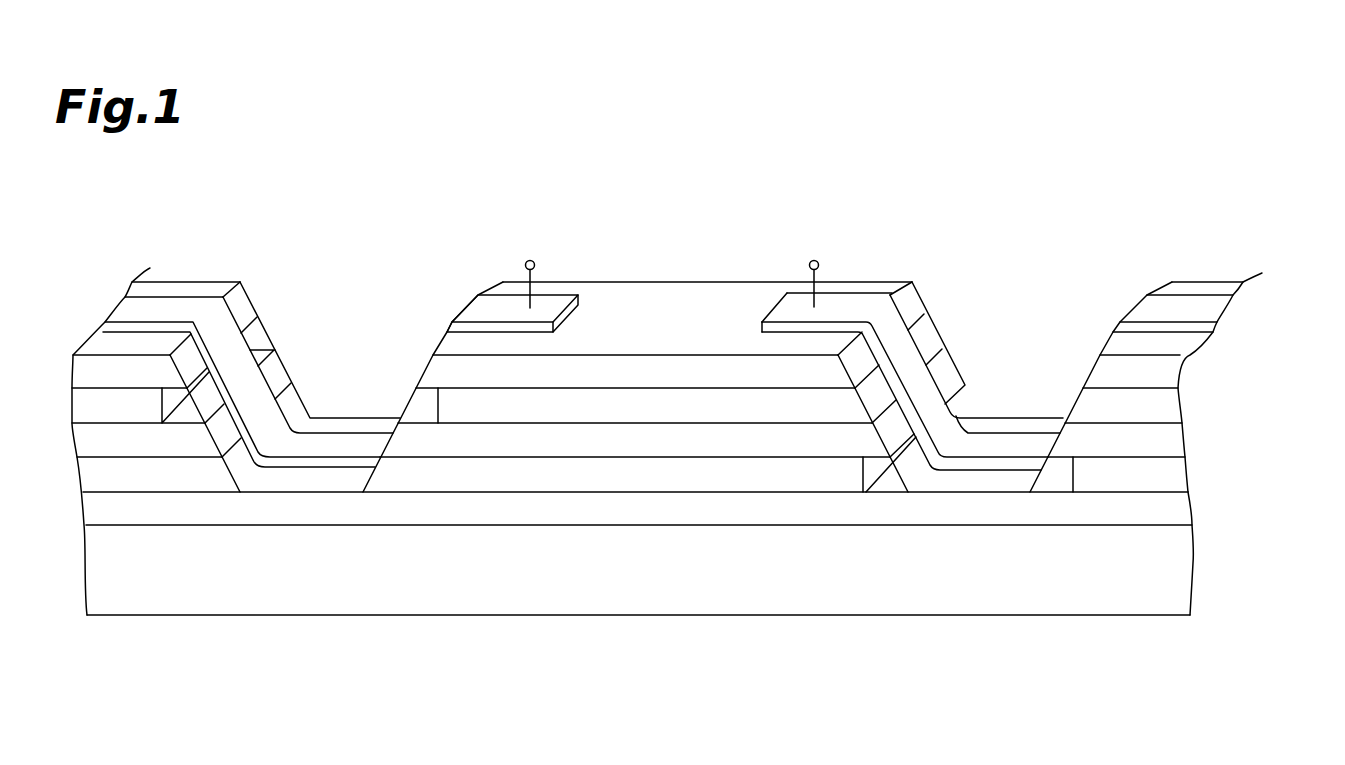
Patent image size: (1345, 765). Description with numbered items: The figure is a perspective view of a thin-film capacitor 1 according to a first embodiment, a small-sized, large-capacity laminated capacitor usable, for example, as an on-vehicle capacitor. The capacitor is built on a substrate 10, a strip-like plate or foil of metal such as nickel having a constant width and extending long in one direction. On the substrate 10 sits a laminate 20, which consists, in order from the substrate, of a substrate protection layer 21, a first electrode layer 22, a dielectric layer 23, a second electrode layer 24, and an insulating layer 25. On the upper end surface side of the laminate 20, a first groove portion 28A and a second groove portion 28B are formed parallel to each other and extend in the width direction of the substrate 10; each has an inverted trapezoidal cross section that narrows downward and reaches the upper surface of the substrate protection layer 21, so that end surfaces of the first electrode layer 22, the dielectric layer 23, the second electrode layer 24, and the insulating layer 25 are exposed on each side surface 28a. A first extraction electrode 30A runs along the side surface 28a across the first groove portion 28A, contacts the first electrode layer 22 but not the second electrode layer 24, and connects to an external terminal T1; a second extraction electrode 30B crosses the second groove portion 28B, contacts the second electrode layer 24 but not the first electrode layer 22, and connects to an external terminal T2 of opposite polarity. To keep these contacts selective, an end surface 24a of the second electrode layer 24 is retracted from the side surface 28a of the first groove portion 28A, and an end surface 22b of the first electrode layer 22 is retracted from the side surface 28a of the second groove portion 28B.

The thin-film capacitor 1 is at (1256, 214).
The substrate 10 is at (1175, 566).
The laminate 20 is at (1260, 355).
The substrate protection layer 21 is at (1175, 506).
The first electrode layer 22 is at (1175, 472).
The end surface of the first electrode layer 22b is at (877, 467).
The dielectric layer 23 is at (1178, 436).
The second electrode layer 24 is at (1178, 402).
The end surface of the second electrode layer 24a is at (176, 402).
The insulating layer 25 is at (1178, 367).
The first groove portion 28A is at (298, 265).
The second groove portion 28B is at (1098, 262).
The side surface 28a is at (280, 378).
The first extraction electrode 30A is at (477, 310).
The second extraction electrode 30B is at (868, 312).
The external terminal T1 is at (529, 268).
The external terminal T2 is at (811, 267).